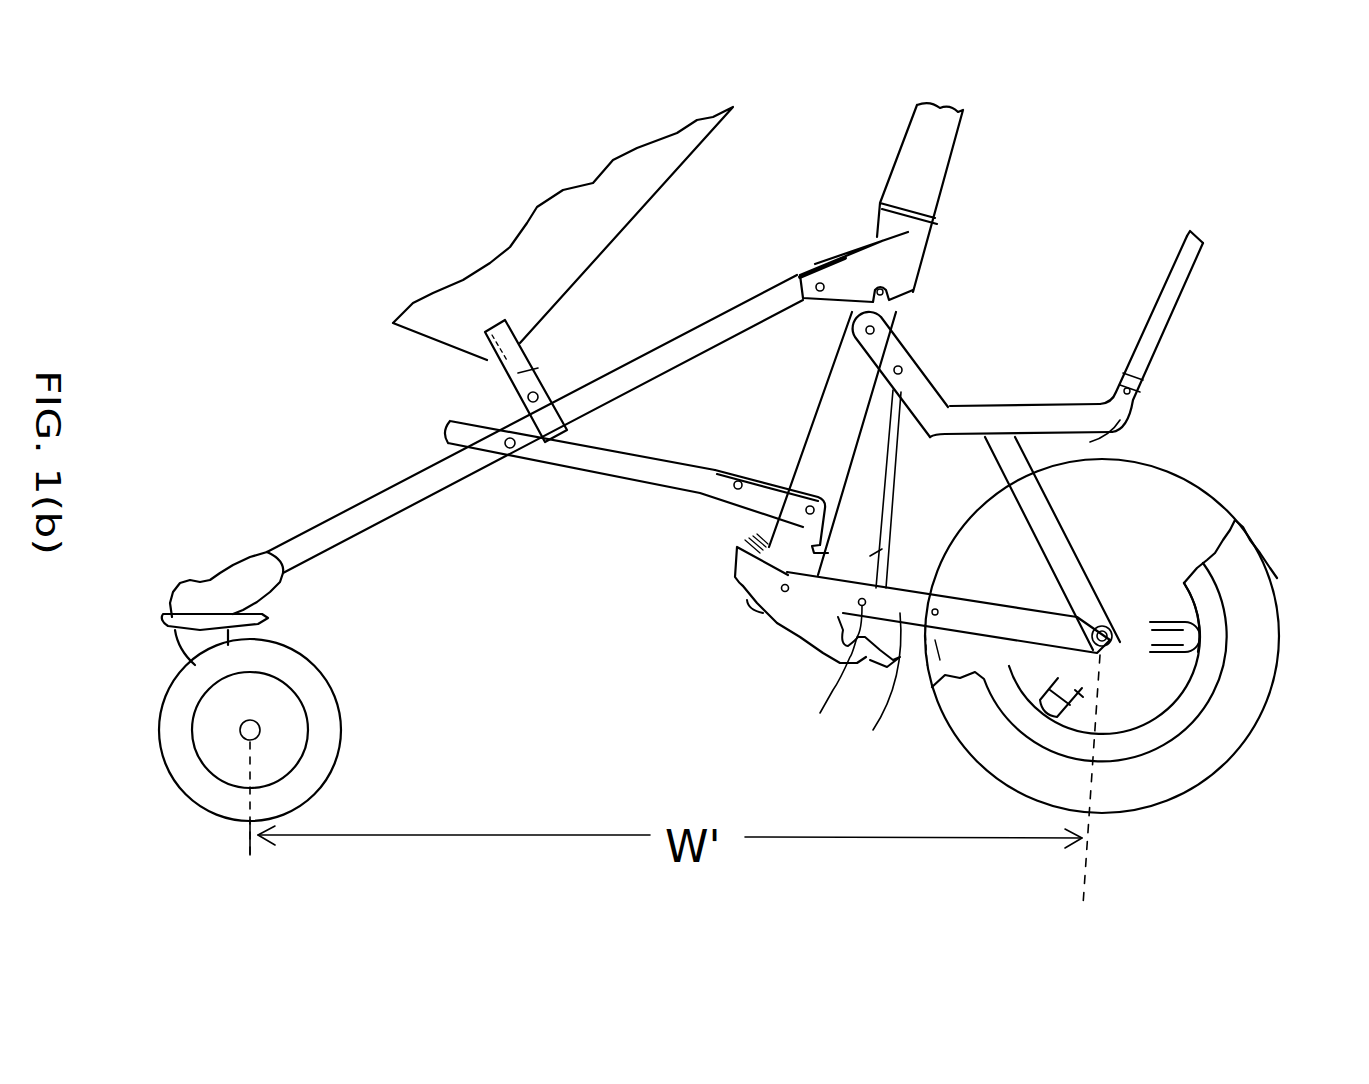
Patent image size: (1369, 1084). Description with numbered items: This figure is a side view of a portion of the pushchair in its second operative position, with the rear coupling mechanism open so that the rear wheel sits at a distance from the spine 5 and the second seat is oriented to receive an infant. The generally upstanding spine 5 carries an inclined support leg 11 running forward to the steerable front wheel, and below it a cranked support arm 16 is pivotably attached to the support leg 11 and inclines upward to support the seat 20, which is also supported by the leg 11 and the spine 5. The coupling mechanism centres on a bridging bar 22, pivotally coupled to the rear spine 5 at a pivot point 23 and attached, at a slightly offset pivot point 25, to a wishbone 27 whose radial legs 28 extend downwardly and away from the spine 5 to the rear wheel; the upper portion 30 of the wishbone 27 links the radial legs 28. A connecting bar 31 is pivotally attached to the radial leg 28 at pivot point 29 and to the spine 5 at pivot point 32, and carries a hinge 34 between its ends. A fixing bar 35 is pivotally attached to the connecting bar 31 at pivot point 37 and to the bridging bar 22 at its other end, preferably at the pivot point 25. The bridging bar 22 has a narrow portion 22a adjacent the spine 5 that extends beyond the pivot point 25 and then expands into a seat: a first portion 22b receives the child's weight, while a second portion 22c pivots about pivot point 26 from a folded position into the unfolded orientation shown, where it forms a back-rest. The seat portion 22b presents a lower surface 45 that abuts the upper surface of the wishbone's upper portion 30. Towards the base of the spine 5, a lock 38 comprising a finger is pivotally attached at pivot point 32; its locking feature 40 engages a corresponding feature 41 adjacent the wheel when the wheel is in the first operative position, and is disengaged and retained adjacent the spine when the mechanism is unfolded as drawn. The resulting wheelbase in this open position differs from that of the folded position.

The spine 5 is at (912, 157).
The support leg 11 is at (345, 523).
The support arm 16 is at (557, 470).
The seat 20 is at (457, 290).
The bridging bar 22 is at (1173, 258).
The narrow portion 22a is at (905, 372).
The first portion 22b is at (983, 407).
The second portion 22c is at (1199, 250).
The pivot point 23 is at (872, 328).
The pivot point 25 is at (905, 395).
The pivot point 26 is at (1140, 380).
The wishbone 27 is at (1005, 493).
The radial leg 28 is at (1057, 547).
The pivot point 29 is at (1118, 630).
The upper portion 30 is at (1030, 462).
The connecting bar 31 is at (874, 573).
The pivot point 32 is at (781, 590).
The hinge 34 is at (942, 660).
The fixing bar 35 is at (880, 552).
The pivot point 37 is at (828, 668).
The lock 38 is at (737, 572).
The locking feature 40 is at (846, 624).
The corresponding feature 41 is at (1117, 643).
The lower surface 45 is at (1090, 441).